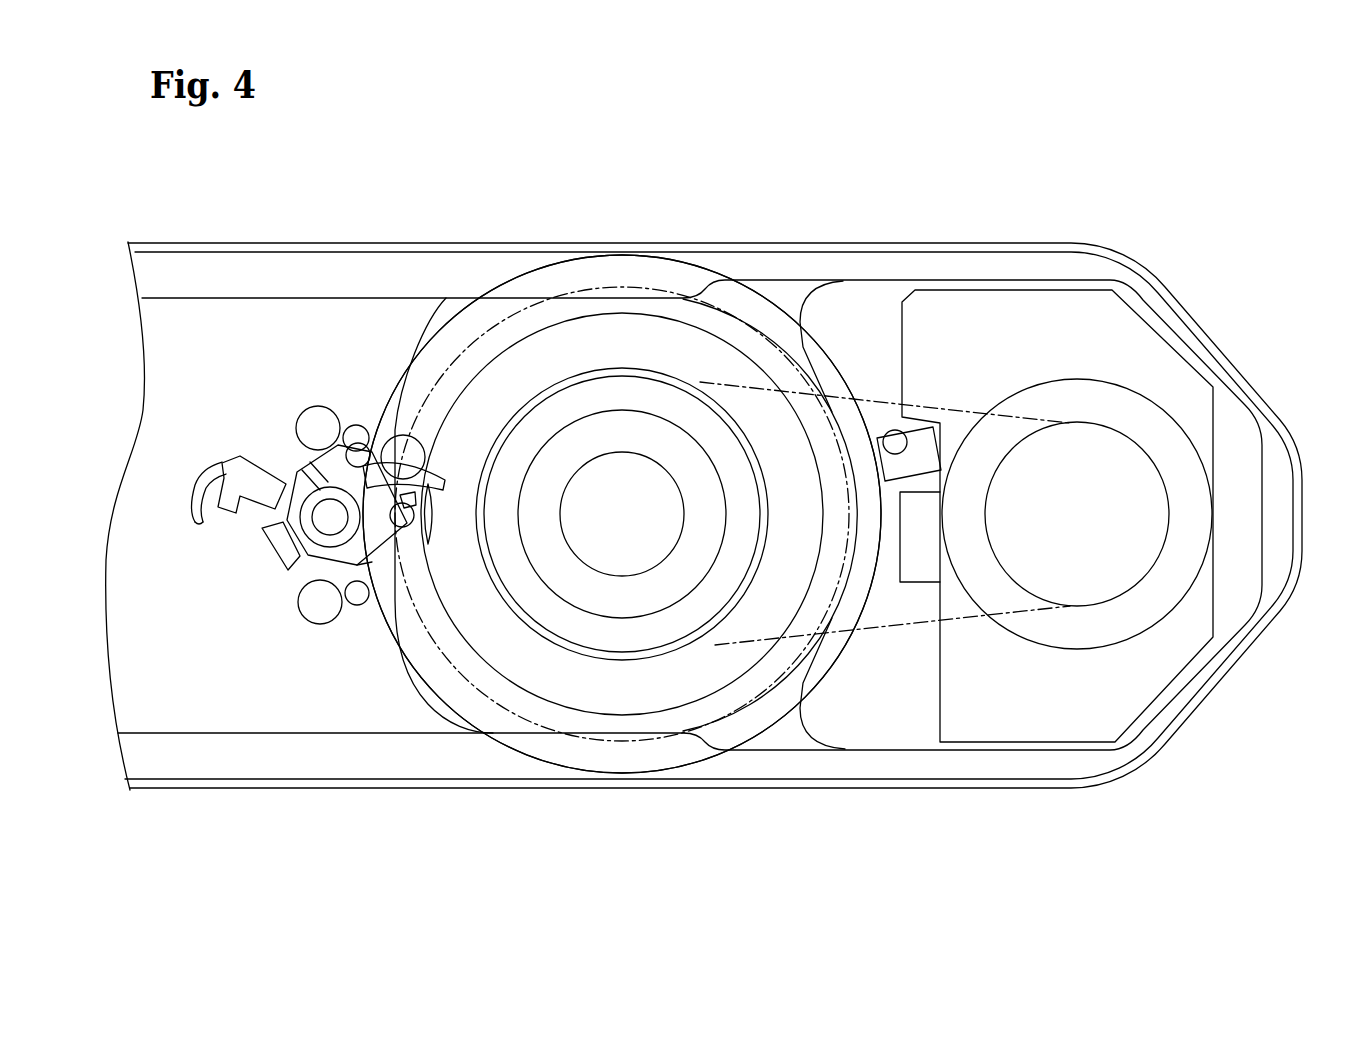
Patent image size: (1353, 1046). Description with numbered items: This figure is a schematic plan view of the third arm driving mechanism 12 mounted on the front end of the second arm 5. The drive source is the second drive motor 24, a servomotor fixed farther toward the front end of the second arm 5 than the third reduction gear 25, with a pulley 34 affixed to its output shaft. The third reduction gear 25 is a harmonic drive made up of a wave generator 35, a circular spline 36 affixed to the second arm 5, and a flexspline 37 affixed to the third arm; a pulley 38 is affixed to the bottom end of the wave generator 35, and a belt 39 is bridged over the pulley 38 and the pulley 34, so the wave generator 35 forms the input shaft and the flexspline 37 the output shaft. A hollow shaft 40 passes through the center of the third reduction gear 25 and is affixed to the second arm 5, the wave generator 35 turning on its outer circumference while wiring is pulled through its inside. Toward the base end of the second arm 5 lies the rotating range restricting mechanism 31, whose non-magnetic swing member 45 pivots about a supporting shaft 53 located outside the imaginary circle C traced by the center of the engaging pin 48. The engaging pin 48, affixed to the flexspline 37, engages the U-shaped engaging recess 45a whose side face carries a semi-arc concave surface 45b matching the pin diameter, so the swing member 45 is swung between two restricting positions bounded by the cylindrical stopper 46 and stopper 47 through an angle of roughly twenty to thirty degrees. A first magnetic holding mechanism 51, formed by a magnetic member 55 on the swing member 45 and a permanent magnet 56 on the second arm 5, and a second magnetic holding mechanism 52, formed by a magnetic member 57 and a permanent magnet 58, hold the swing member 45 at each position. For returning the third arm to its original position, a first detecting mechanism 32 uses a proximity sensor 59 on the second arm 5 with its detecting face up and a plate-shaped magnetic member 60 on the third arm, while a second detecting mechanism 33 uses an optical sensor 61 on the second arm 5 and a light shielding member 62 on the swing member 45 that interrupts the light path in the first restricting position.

The second arm 5 is at (1013, 243).
The third arm driving mechanism 12 is at (911, 172).
The second drive motor 24 is at (1086, 652).
The third reduction gear 25 is at (513, 275).
The flexspline 37 is at (622, 514).
The imaginary circle C is at (603, 742).
The circular spline 36 is at (623, 333).
The pulley 38 is at (705, 400).
The wave generator 35 is at (626, 624).
The hollow shaft 40 is at (622, 452).
The belt 39 is at (897, 634).
The first detecting mechanism 32 is at (908, 340).
The proximity sensor 59 is at (893, 432).
The magnetic member 60 is at (915, 430).
The pulley 34 is at (1028, 595).
The rotating range restricting mechanism 31 is at (192, 639).
The second detecting mechanism 33 is at (175, 553).
The optical sensor 61 is at (221, 508).
The light shielding member 62 is at (262, 530).
The supporting shaft 53 is at (318, 496).
The stopper 47 is at (318, 406).
The second magnetic holding mechanism 52 is at (330, 340).
The permanent magnet 58 is at (357, 425).
The magnetic member 57 is at (366, 452).
The engaging pin 48 is at (419, 442).
The concave surface 45b is at (428, 470).
The engaging recess 45a is at (418, 490).
The swing member 45 is at (415, 513).
The stopper 46 is at (300, 607).
The permanent magnet 56 is at (357, 606).
The magnetic member 55 is at (376, 614).
The first magnetic holding mechanism 51 is at (330, 668).